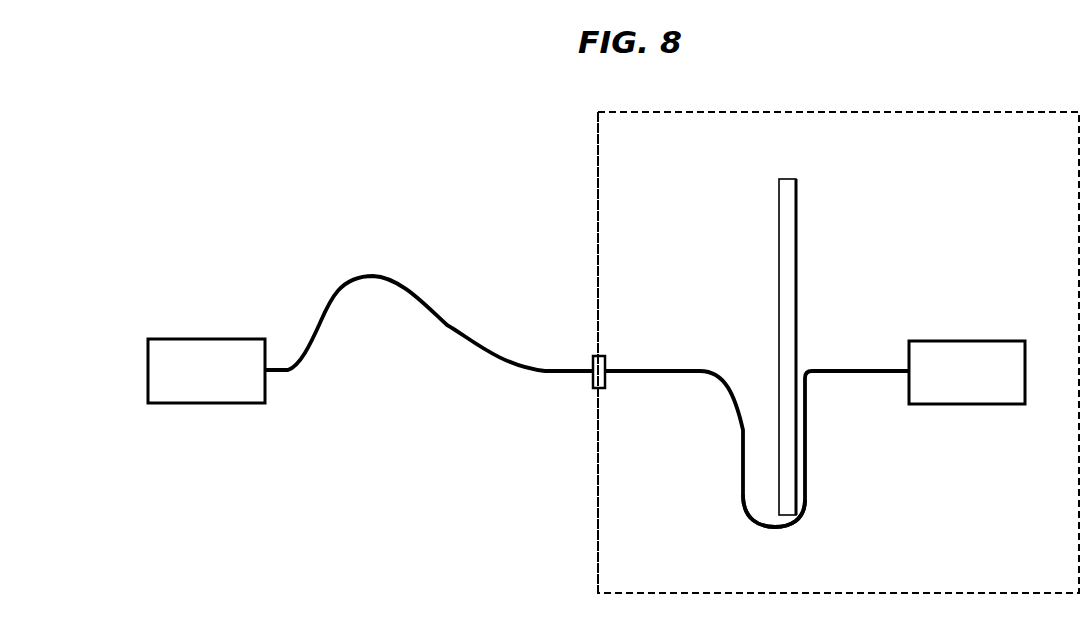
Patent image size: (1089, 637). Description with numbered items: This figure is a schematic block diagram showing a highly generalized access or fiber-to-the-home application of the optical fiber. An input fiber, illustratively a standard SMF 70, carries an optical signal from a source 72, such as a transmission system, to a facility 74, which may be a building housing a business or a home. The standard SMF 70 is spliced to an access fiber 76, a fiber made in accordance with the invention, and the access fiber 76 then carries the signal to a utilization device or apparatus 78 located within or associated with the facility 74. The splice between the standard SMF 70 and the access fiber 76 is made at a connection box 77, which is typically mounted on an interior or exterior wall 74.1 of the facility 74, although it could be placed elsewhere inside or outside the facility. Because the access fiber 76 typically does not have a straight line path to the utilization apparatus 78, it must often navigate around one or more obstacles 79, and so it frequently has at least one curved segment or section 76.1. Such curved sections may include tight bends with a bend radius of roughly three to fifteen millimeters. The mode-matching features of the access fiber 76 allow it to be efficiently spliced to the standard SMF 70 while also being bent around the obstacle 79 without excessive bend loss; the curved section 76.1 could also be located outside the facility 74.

The standard SMF 70 is at (473, 338).
The source 72 is at (172, 339).
The facility 74 is at (1043, 110).
The wall 74.1 is at (600, 217).
The access fiber 76 is at (712, 372).
The curved segment or section 76.1 is at (800, 525).
The connection box 77 is at (606, 380).
The utilization device or apparatus 78 is at (985, 341).
The obstacle 79 is at (797, 196).